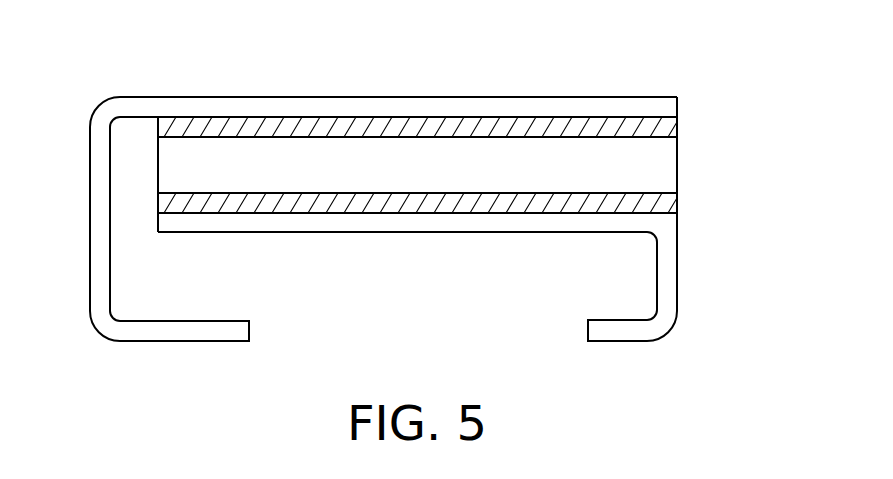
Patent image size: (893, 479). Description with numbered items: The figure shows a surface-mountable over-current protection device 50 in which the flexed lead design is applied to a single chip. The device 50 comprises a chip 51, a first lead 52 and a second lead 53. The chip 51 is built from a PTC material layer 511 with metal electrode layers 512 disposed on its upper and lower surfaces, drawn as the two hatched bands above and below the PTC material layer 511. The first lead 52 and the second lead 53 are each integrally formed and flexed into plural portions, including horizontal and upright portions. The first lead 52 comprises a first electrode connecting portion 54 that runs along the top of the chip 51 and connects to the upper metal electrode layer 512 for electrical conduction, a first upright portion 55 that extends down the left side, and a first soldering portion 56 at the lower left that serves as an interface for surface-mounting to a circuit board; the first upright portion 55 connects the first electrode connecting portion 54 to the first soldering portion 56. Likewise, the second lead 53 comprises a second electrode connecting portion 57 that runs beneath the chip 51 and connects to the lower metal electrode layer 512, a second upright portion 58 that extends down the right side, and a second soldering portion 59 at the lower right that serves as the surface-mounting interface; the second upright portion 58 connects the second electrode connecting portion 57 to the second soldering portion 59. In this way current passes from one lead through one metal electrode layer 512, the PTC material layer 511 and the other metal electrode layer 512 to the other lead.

The surface-mountable over-current protection device 50 is at (740, 50).
The chip 51 is at (444, 162).
The first lead 52 is at (100, 100).
The second lead 53 is at (668, 328).
The first electrode connecting portion 54 is at (313, 107).
The first upright portion 55 is at (100, 222).
The first soldering portion 56 is at (183, 330).
The second electrode connecting portion 57 is at (472, 218).
The second upright portion 58 is at (667, 270).
The second soldering portion 59 is at (607, 330).
The PTC material layer 511 is at (414, 160).
The metal electrode layers 512 is at (513, 120).